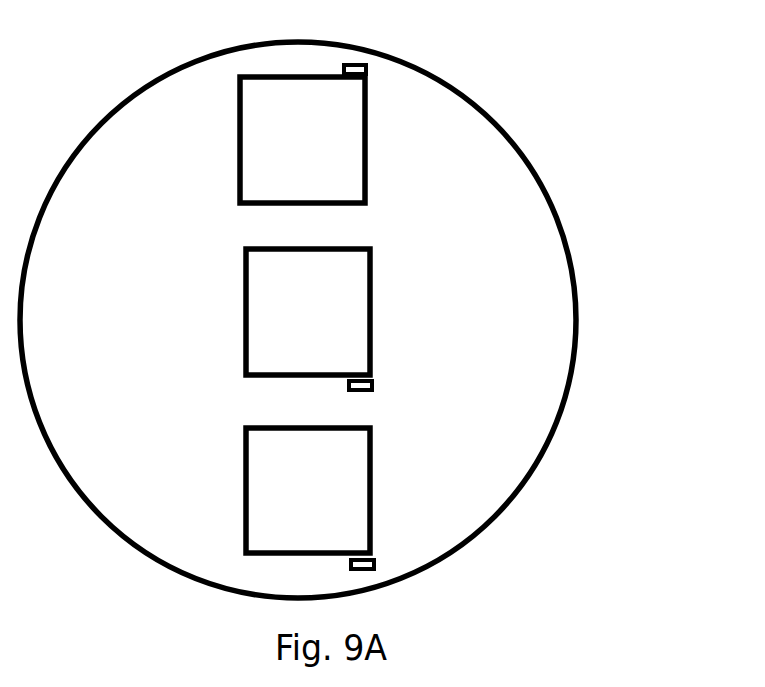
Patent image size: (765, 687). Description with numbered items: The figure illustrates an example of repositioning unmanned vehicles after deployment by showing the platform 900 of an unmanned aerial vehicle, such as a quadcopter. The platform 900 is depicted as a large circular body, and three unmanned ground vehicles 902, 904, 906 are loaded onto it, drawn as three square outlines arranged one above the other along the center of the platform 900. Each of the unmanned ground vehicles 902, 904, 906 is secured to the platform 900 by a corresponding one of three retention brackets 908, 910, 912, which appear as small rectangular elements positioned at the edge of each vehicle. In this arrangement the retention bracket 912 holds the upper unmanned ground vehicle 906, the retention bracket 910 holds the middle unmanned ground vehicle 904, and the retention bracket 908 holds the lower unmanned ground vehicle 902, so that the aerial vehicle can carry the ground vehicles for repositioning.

The platform 900 is at (368, 320).
The unmanned ground vehicle 902 is at (267, 490).
The unmanned ground vehicle 904 is at (246, 292).
The unmanned ground vehicle 906 is at (249, 140).
The retention bracket 908 is at (483, 533).
The retention bracket 910 is at (425, 417).
The retention bracket 912 is at (422, 41).